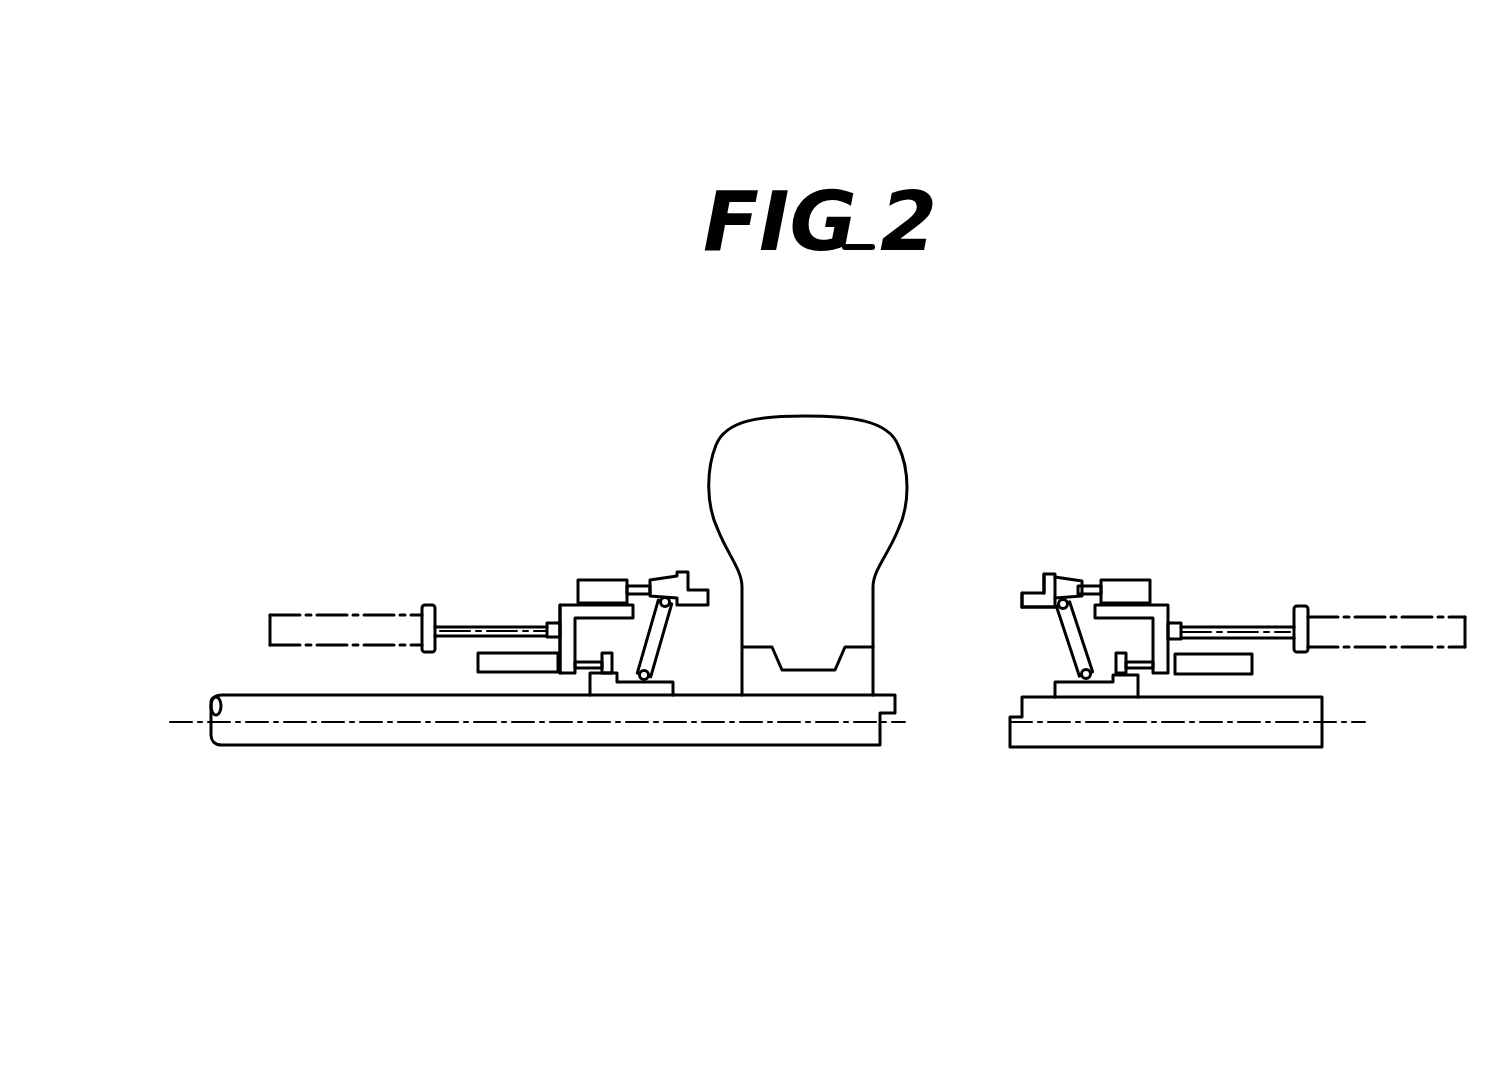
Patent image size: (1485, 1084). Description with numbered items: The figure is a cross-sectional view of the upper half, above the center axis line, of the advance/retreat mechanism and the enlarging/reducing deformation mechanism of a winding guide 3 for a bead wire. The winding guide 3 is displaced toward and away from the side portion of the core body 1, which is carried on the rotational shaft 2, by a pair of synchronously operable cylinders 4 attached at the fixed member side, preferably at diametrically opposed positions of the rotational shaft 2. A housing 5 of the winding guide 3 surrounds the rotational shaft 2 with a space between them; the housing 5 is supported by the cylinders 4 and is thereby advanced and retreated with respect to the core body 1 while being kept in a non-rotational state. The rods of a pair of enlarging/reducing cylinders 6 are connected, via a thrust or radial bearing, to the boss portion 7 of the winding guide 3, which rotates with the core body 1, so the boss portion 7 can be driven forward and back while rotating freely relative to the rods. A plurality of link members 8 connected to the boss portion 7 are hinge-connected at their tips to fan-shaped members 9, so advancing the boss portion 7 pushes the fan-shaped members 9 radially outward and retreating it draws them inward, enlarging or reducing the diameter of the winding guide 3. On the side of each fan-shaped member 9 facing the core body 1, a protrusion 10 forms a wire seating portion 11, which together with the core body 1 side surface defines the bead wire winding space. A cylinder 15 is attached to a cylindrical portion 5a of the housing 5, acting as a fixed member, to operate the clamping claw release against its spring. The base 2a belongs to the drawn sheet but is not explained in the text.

The core body 1 is at (903, 460).
The rotational shaft 2 is at (729, 752).
The base section 2a is at (1185, 745).
The winding guide 3 is at (660, 552).
The cylinder 4 is at (350, 615).
The housing 5 is at (548, 594).
The cylindrical portion 5a is at (565, 600).
The enlarging/reducing cylinder 6 is at (517, 668).
The boss portion 7 is at (633, 690).
The link member 8 is at (667, 633).
The fan-shaped member 9 is at (1047, 572).
The protrusion 10 is at (1033, 607).
The wire seating portion 11 is at (1004, 592).
The cylinder 15 is at (593, 577).